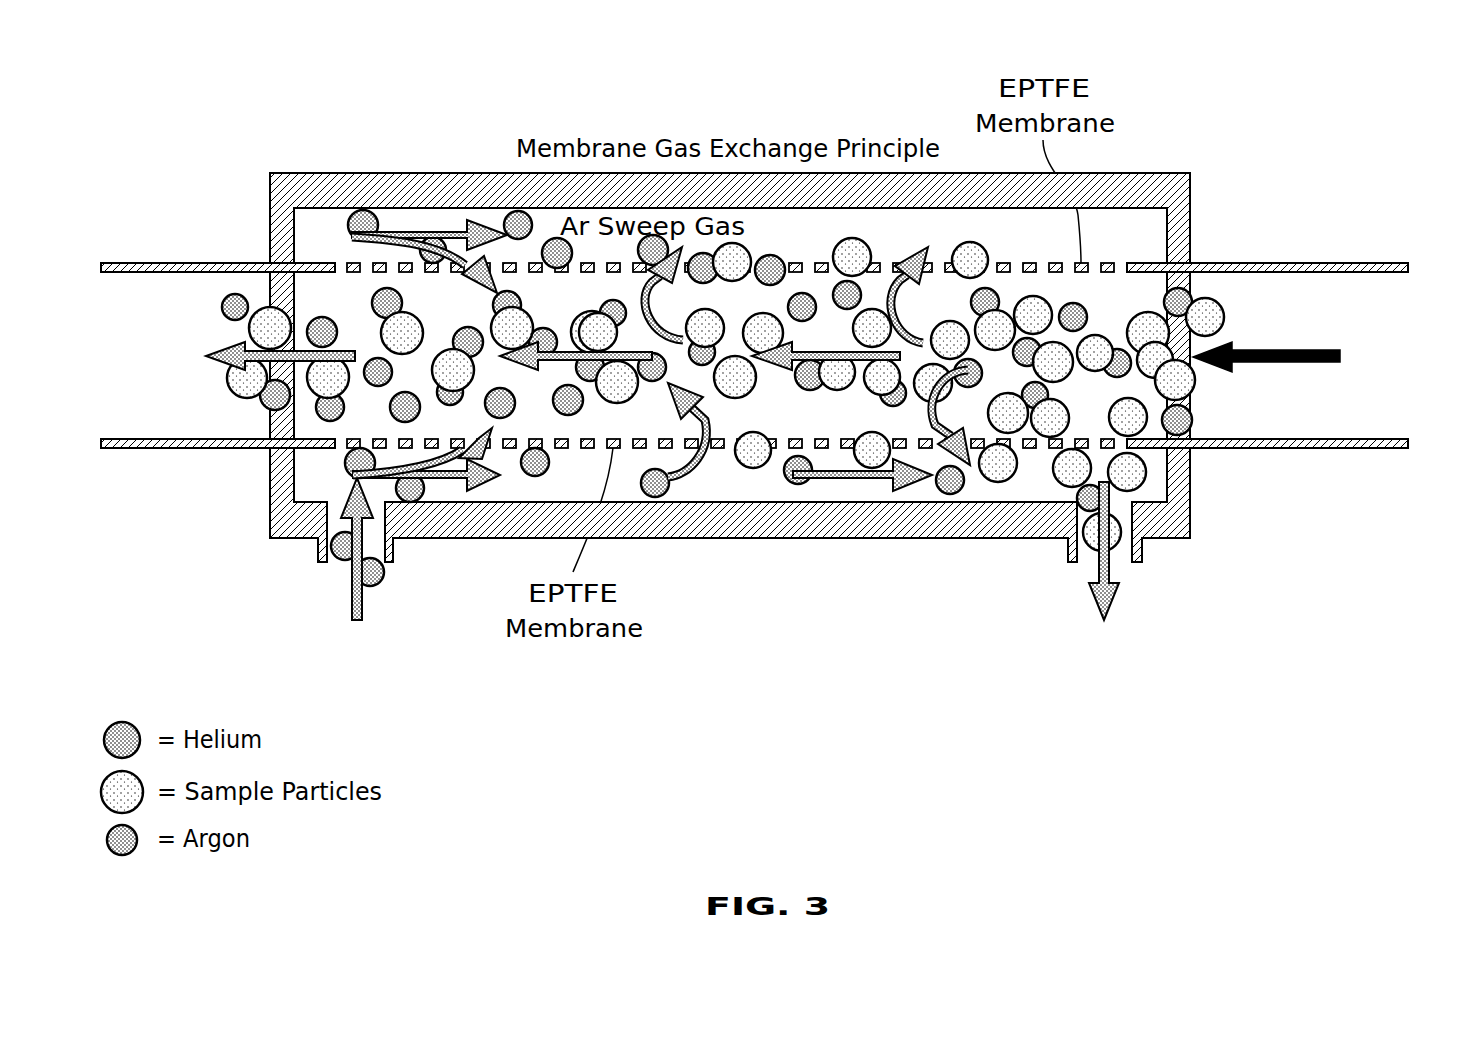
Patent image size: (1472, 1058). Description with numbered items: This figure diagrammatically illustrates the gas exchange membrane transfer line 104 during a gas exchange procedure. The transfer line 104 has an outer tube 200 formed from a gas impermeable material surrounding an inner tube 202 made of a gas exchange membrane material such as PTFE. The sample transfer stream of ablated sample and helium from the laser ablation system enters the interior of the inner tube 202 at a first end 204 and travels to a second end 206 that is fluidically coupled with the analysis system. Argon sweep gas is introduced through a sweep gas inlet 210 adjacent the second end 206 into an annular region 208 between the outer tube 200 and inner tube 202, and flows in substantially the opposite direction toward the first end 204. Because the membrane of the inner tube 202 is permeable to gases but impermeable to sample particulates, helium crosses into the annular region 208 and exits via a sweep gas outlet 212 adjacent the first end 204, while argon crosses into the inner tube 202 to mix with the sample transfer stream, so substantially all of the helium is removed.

The gas exchange membrane transfer line 104 is at (560, 70).
The outer tube 200 is at (410, 172).
The inner tube 202 is at (1104, 263).
The first end 204 is at (1180, 140).
The second end 206 is at (282, 140).
The annular region 208 is at (713, 475).
The sweep gas inlet 210 is at (385, 547).
The sweep gas outlet 212 is at (1068, 559).